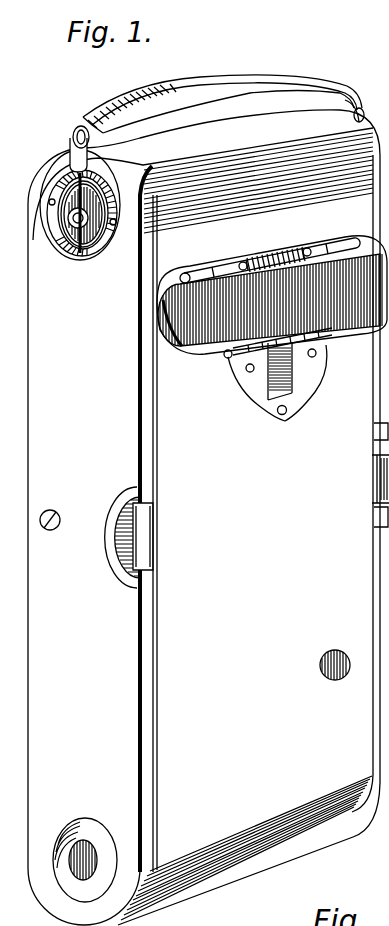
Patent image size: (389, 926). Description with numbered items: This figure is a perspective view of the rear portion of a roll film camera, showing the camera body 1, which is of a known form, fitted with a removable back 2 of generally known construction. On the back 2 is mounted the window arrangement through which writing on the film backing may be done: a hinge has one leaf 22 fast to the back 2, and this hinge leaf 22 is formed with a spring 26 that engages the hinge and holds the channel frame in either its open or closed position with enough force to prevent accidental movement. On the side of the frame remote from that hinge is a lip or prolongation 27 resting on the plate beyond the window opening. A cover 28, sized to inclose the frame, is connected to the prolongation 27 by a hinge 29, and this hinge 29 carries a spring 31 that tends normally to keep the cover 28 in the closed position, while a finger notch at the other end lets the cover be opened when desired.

The camera body 1 is at (204, 500).
The removable back 2 is at (253, 540).
The hinge leaf 22 is at (250, 383).
The spring 26 is at (287, 367).
The lip or prolongation 27 is at (328, 340).
The cover 28 is at (193, 342).
The hinge 29 is at (228, 266).
The spring 31 is at (273, 250).